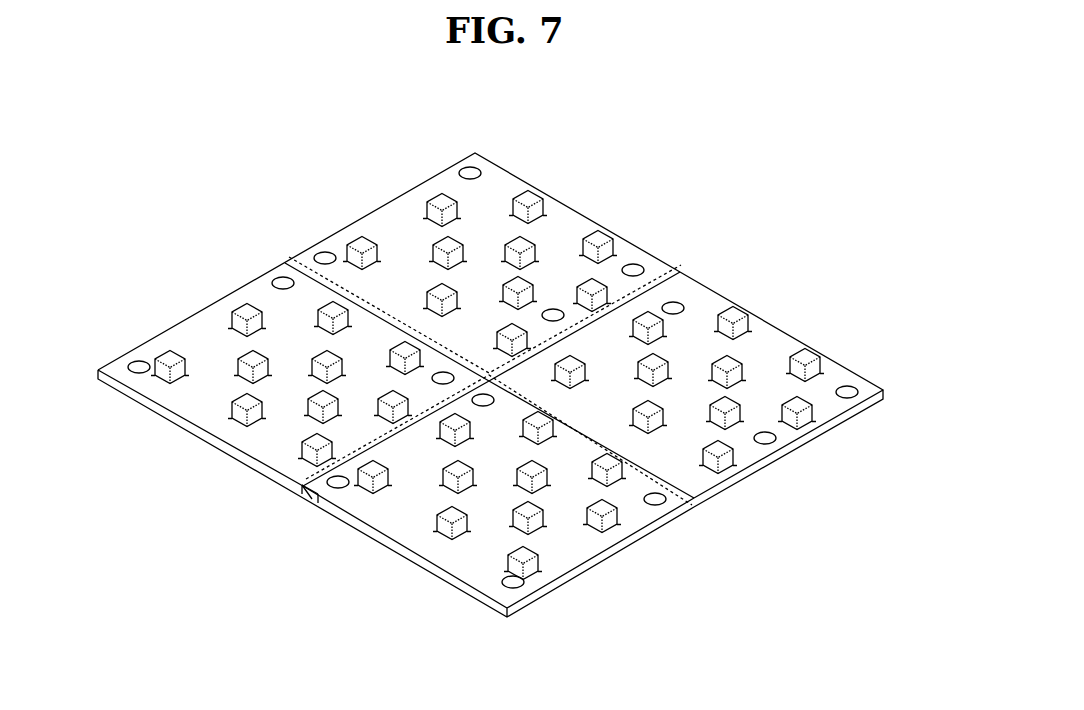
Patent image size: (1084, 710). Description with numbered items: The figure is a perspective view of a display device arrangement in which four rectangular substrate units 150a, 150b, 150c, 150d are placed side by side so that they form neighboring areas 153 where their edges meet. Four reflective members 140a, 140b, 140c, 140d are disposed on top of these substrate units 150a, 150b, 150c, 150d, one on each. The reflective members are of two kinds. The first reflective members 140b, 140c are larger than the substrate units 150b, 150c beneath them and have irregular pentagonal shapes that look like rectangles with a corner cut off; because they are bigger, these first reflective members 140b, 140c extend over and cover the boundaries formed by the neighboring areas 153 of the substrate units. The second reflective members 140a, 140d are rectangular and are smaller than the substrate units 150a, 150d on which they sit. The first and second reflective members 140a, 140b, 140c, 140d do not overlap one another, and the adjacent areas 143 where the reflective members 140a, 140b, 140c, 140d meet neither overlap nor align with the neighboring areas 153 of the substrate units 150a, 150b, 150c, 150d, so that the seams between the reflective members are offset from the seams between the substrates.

The second reflective member 140a is at (205, 330).
The first reflective member 140b is at (640, 513).
The first reflective member 140c is at (557, 226).
The second reflective member 140d is at (767, 349).
The substrate unit 150a is at (207, 445).
The substrate unit 150b is at (398, 552).
The substrate unit 150c is at (388, 214).
The substrate unit 150d is at (763, 466).
The adjacent area 143 is at (697, 278).
The neighboring area 153 is at (310, 500).